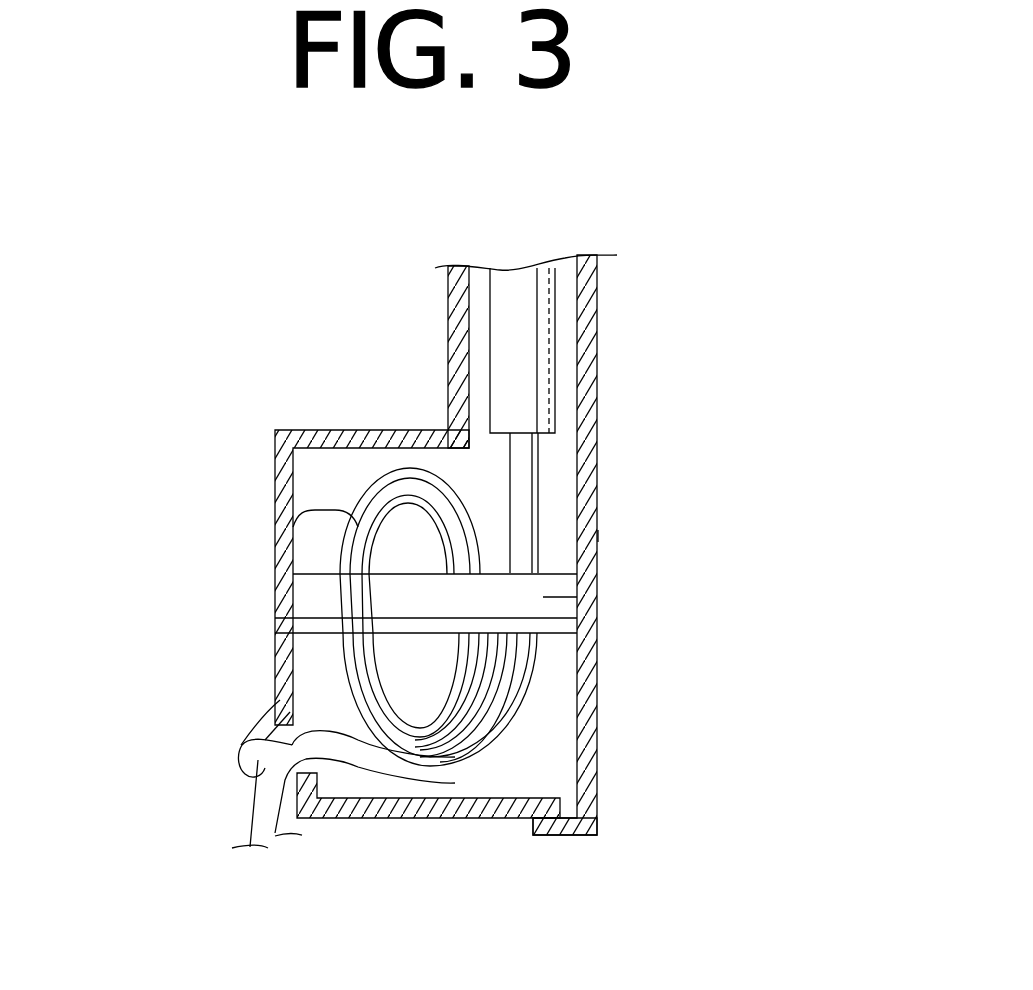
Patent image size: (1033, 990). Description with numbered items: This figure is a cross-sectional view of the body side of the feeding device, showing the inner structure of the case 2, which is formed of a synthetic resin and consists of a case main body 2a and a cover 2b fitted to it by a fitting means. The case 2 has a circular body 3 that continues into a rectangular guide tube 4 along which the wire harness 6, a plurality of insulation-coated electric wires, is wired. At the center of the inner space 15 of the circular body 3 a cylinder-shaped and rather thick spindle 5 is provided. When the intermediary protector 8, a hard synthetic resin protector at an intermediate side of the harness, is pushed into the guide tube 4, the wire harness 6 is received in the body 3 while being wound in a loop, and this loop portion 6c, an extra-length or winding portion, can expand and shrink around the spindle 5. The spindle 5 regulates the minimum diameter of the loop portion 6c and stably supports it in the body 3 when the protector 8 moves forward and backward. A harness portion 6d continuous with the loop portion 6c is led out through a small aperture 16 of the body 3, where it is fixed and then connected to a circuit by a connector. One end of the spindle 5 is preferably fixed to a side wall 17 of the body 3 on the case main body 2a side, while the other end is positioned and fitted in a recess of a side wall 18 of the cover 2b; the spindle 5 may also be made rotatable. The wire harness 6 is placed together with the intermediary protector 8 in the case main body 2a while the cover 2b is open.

The case 2 is at (600, 350).
The case main body 2a is at (412, 820).
The cover 2b is at (600, 772).
The circular body 3 is at (268, 452).
The guide tube 4 is at (597, 297).
The spindle 5 is at (595, 603).
The wire harness 6 is at (545, 493).
The loop portion 6c is at (290, 527).
The harness portion 6d is at (253, 810).
The intermediary protector 8 is at (517, 338).
The inner space 15 is at (550, 705).
The small aperture 16 is at (273, 723).
The side wall 17 is at (277, 623).
The side wall 18 is at (598, 535).